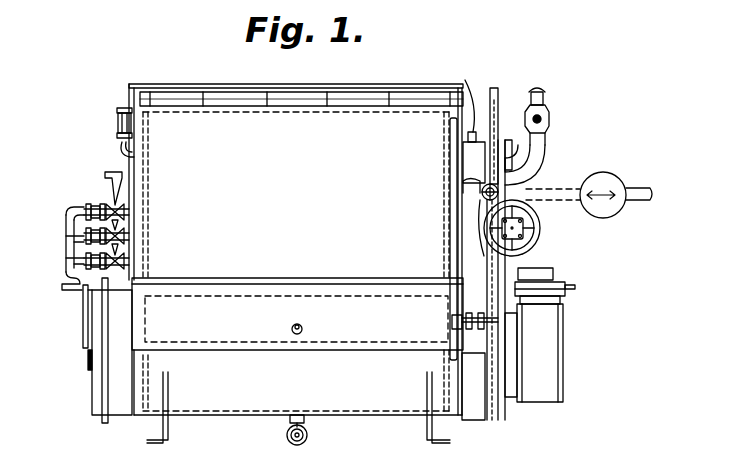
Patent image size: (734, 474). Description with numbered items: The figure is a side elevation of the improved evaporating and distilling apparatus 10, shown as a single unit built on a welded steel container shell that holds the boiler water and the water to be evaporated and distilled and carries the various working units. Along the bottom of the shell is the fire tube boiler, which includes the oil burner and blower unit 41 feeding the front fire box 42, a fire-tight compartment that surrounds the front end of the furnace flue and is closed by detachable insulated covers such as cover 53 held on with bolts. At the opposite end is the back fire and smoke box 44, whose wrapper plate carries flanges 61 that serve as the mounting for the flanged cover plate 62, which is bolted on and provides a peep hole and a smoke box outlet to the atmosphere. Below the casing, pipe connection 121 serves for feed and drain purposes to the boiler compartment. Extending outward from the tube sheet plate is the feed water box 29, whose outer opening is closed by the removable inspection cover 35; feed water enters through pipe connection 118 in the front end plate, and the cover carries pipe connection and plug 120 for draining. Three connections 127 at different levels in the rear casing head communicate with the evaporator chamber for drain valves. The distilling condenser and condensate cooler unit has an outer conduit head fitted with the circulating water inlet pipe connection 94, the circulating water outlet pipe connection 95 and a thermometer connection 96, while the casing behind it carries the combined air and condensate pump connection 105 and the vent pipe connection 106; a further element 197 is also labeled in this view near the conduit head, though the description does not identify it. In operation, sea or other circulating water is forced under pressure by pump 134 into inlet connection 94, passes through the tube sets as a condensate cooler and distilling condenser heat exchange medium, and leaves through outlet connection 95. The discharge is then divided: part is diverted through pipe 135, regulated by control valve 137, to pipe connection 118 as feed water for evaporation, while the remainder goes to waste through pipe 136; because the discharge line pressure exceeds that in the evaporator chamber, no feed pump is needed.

The evaporating and distilling apparatus 10 is at (296, 279).
The feed water box 29 is at (246, 352).
The inspection cover 35 is at (373, 331).
The oil burner and blower unit 41 is at (555, 378).
The front fire box 42 is at (468, 410).
The back fire and smoke box 44 is at (127, 412).
The detachable insulated cover 53 is at (497, 400).
The flanges 61 is at (83, 322).
The flanged cover plate 62 is at (98, 388).
The circulating water inlet pipe connection 94 is at (538, 214).
The circulating water outlet pipe connection 95 is at (547, 142).
The thermometer connection 96 is at (518, 182).
The combined air and condensate pump connection 105 is at (464, 188).
The vent pipe connection 106 is at (452, 99).
The pipe connection 118 is at (452, 320).
The pipe connection and plug 120 is at (301, 328).
The pipe connection 121 is at (289, 422).
The connections 127 is at (135, 213).
The pump 134 is at (616, 215).
The pipe 135 is at (519, 75).
The pipe 136 is at (544, 92).
The control valve 137 is at (455, 200).
The gauge 197 is at (503, 150).